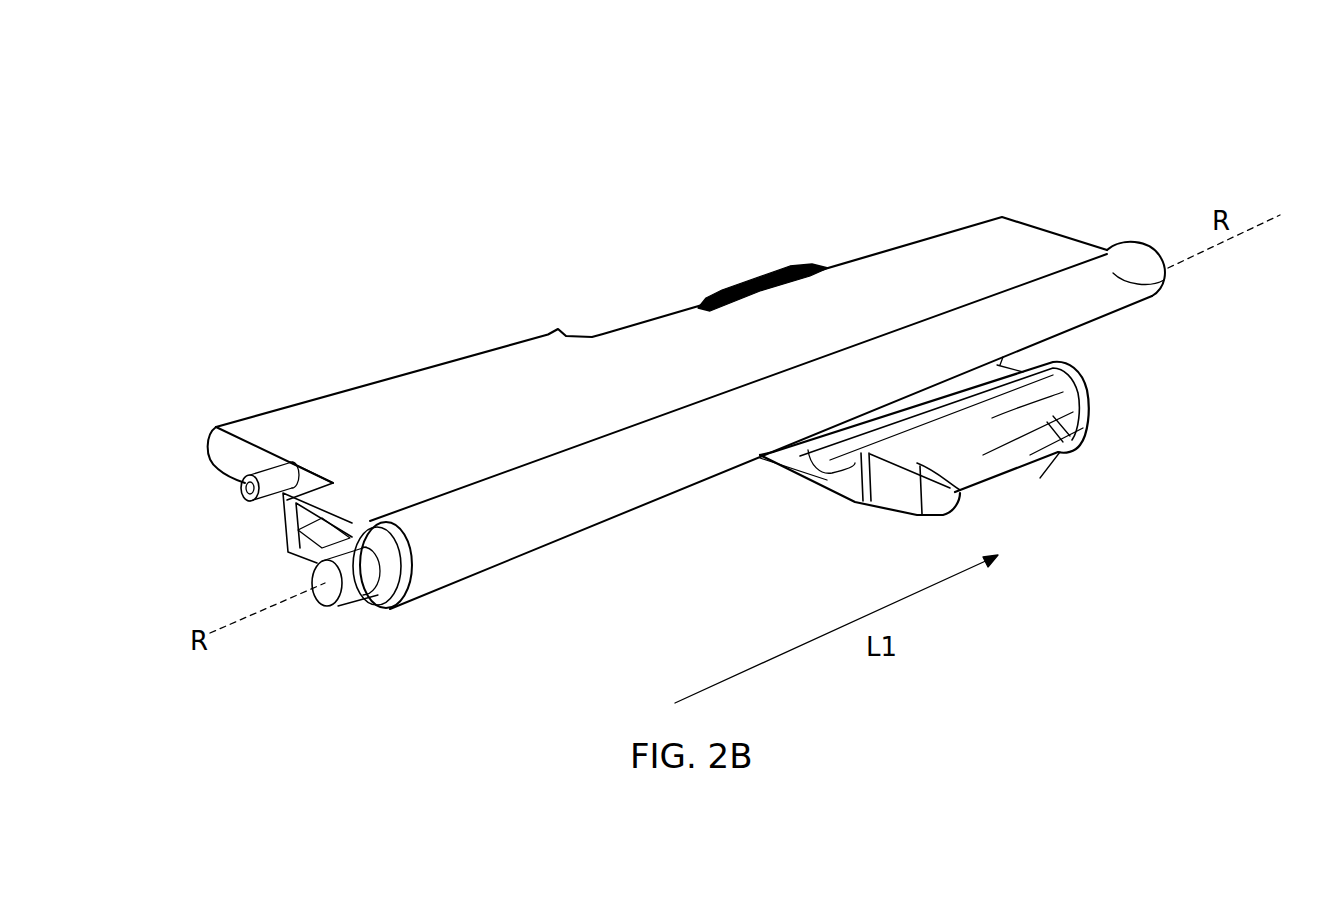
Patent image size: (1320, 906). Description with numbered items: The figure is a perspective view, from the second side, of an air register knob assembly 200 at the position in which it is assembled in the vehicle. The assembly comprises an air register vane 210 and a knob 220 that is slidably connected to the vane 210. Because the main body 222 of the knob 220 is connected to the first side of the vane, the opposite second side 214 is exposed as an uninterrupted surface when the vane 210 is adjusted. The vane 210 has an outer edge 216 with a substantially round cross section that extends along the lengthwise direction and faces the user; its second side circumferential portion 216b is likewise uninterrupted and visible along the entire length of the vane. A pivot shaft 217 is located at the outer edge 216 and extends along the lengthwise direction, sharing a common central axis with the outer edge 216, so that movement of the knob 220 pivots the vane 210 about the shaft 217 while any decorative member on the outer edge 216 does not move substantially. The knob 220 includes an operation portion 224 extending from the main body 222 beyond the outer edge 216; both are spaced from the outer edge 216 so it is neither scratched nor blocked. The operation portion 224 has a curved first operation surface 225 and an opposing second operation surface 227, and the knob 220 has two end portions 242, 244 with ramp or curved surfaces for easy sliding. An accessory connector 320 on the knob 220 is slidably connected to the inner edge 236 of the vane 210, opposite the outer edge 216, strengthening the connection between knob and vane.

The air register knob assembly 200 is at (956, 125).
The air register vane 210 is at (584, 548).
The second side 214 is at (522, 387).
The outer edge 216 is at (448, 590).
The second side circumferential portion 216b is at (1167, 279).
The pivot shaft 217 is at (326, 583).
The knob 220 is at (1090, 440).
The main body 222 is at (785, 472).
The operation portion 224 is at (1040, 478).
The first operation surface 225 is at (1080, 390).
The second operation surface 227 is at (980, 500).
The inner edge 236 is at (340, 390).
The end portion 242 is at (880, 483).
The end portion 244 is at (1093, 398).
The accessory connector 320 is at (745, 279).